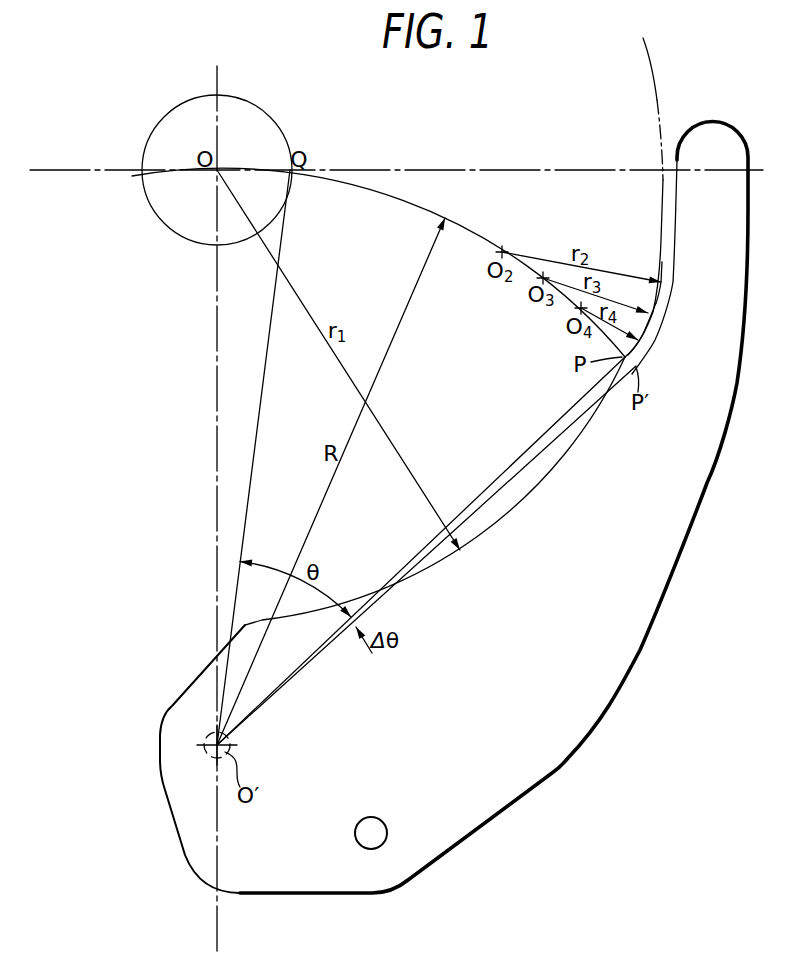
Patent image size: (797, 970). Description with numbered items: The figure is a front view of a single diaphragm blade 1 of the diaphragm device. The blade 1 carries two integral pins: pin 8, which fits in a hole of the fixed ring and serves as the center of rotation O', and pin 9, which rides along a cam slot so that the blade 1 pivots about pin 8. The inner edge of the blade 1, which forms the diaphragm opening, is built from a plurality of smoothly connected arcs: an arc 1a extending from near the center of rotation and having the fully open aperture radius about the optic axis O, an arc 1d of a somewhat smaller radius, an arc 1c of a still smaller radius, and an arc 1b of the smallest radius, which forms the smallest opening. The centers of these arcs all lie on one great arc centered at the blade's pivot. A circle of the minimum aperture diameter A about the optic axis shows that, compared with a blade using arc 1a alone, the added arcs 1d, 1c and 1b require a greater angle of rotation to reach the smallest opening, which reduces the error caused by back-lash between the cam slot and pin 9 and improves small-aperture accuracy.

The diaphragm blade 1 is at (658, 563).
The arc of fully open aperture radius 1a is at (436, 569).
The arc of smallest radius 1b is at (641, 344).
The arc of radius r3 1c is at (651, 313).
The arc of radius r2 1d is at (662, 283).
The pin 8 is at (207, 731).
The pin 9 is at (370, 835).
The minimum aperture diameter A is at (283, 138).